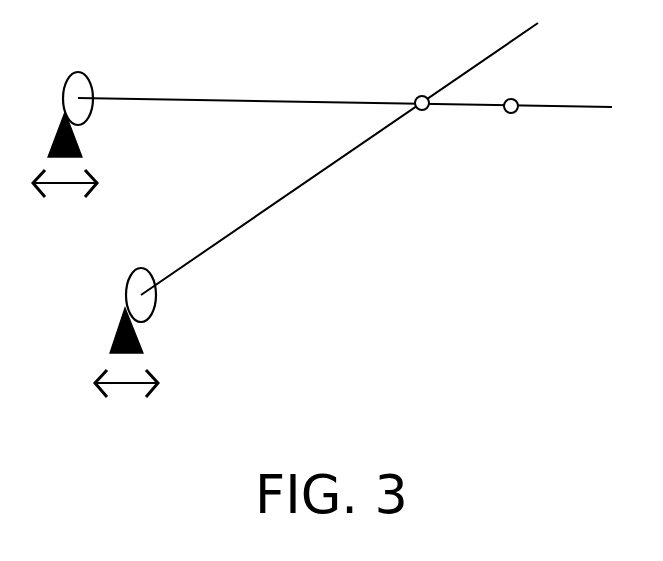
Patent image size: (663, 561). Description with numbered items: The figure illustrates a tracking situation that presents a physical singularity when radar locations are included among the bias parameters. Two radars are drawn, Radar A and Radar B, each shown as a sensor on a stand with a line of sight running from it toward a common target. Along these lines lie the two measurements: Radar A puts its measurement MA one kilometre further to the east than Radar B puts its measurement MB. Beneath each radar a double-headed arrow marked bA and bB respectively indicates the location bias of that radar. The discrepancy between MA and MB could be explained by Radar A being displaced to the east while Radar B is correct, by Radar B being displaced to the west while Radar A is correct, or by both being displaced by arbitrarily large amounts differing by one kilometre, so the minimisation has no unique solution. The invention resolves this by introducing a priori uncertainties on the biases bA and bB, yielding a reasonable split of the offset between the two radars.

The Radar A is at (86, 114).
The Radar B is at (147, 310).
The baseline width of camera A bA is at (65, 207).
The baseline width of camera B bB is at (126, 406).
The measurement of Radar A MA is at (522, 92).
The measurement of Radar B MB is at (423, 123).